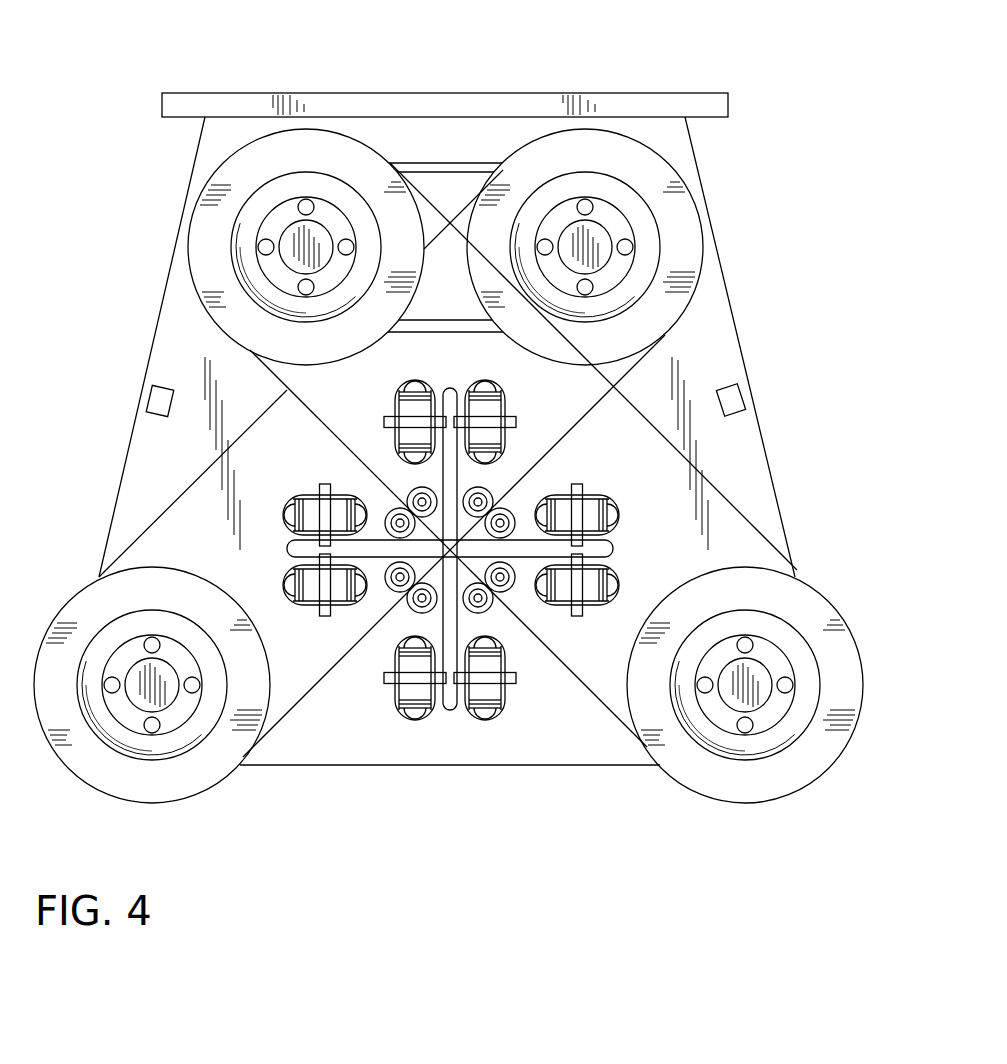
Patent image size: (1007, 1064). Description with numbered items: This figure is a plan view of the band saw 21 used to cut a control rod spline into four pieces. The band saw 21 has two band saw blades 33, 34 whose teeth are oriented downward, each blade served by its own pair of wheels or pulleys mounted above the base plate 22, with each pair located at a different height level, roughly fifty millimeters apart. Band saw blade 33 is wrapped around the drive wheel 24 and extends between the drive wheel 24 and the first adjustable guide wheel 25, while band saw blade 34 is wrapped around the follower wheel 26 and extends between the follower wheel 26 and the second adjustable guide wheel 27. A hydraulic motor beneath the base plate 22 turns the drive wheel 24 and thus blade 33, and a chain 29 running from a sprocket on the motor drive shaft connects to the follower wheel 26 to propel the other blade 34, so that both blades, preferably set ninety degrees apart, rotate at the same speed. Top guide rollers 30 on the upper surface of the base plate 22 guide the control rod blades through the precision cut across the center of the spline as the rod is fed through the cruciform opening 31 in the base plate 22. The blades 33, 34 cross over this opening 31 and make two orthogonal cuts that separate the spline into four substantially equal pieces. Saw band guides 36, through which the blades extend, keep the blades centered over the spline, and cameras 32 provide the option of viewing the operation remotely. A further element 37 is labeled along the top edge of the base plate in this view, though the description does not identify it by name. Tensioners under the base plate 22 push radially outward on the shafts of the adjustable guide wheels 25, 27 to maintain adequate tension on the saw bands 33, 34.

The band saw 21 is at (436, 389).
The base plate 22 is at (177, 358).
The drive wheel 24 is at (210, 225).
The first adjustable guide wheel 25 is at (783, 777).
The follower wheel 26 is at (685, 207).
The second adjustable guide wheel 27 is at (172, 778).
The chain 29 is at (447, 160).
The top guide rollers 30 is at (418, 707).
The cruciform opening 31 is at (612, 550).
The cameras 32 is at (145, 392).
The band saw blade 33 is at (717, 495).
The band saw blade 34 is at (305, 700).
The saw band guides 36 is at (502, 517).
The top plate 37 is at (573, 100).